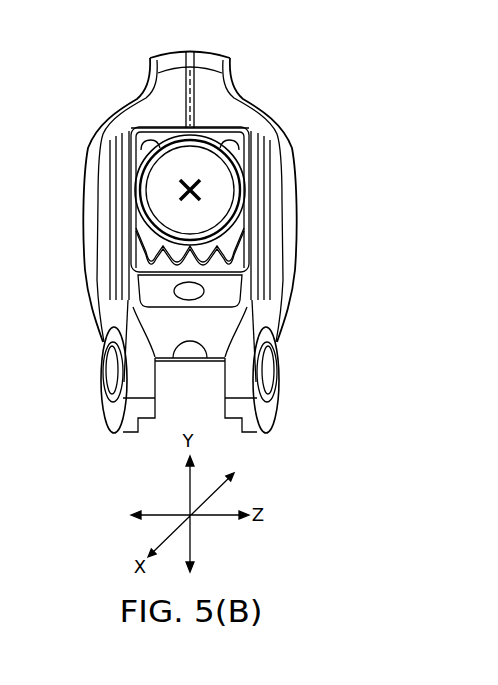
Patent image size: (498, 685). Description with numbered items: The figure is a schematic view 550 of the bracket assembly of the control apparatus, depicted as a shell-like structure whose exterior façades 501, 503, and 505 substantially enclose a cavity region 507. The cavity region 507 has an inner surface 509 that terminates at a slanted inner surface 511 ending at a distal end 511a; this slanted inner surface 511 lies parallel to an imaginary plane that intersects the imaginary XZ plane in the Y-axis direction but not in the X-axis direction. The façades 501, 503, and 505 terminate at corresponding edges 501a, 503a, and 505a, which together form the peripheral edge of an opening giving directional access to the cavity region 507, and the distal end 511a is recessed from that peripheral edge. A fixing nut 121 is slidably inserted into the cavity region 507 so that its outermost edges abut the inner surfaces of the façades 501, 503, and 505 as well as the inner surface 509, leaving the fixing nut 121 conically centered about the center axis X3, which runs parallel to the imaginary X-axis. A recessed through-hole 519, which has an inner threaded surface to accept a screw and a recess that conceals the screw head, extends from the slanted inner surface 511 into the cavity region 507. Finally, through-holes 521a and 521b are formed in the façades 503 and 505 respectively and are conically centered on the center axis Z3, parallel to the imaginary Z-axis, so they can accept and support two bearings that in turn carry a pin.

The schematic view 550 is at (335, 85).
The exterior façade 501 is at (204, 68).
The edge 501a is at (173, 118).
The fixing nut 121 is at (147, 138).
The cavity region 507 is at (200, 166).
The center axis X3 is at (208, 188).
The edge 503a is at (130, 192).
The exterior façade 503 is at (100, 216).
The inner surface 509 is at (143, 266).
The edge 505a is at (252, 215).
The exterior façade 505 is at (278, 270).
The slanted inner surface 511 is at (226, 288).
The recessed through-hole 519 is at (187, 295).
The distal end 511a is at (207, 350).
The center axis Z3 is at (310, 368).
The through-hole 521a is at (108, 374).
The through-hole 521b is at (272, 374).